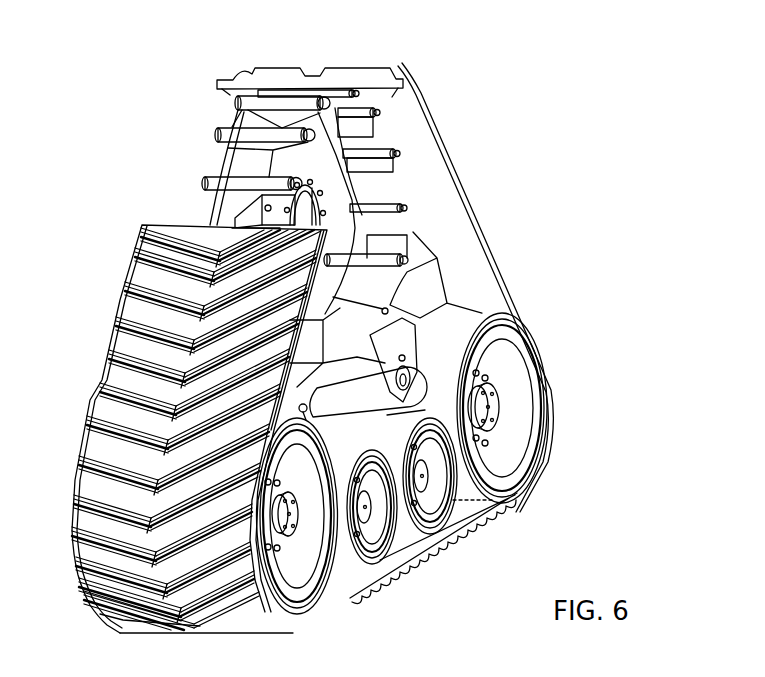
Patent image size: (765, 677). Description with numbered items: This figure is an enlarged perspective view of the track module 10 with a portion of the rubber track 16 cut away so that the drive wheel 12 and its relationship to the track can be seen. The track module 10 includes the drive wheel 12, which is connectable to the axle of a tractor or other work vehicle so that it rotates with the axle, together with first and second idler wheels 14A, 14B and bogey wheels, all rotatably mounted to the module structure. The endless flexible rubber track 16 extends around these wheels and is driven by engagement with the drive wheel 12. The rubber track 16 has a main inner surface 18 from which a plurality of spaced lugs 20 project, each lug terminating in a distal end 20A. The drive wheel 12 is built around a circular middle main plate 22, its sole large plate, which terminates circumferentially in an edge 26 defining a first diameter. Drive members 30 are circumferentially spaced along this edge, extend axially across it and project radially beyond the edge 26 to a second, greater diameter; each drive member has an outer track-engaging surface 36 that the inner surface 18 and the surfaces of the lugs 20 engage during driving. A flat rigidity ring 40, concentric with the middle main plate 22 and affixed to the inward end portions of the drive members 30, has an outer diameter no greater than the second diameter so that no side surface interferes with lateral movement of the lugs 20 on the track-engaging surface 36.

The track module 10 is at (583, 219).
The drive wheel 12 is at (332, 167).
The first idler wheel 14A is at (326, 573).
The second idler wheel 14B is at (468, 320).
The rubber track 16 is at (130, 331).
The main inner surface 18 is at (458, 228).
The lugs 20 is at (416, 250).
The distal end 20A is at (362, 187).
The middle main plate 22 is at (318, 152).
The edge 26 is at (258, 209).
The drive members 30 is at (293, 102).
The track-engaging surface 36 is at (237, 136).
The rigidity ring 40 is at (222, 155).